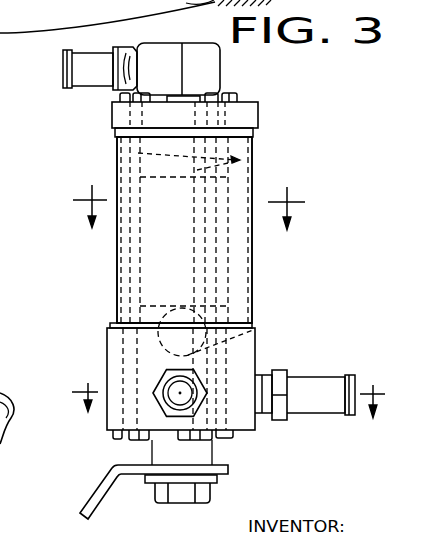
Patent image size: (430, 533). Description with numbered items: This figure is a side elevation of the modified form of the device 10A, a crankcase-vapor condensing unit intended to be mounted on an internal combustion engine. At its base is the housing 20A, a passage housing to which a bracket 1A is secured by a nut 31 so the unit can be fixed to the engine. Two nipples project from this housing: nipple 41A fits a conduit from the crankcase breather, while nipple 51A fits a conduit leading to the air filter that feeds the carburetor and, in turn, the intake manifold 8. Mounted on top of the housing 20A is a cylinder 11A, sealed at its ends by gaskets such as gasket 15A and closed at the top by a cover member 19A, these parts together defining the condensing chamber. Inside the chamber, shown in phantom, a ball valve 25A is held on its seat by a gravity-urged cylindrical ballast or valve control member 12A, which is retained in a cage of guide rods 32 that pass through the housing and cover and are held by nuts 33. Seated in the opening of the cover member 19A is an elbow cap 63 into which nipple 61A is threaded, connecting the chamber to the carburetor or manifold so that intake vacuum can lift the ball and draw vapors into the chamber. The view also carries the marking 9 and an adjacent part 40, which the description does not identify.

The bracket 1A is at (100, 477).
The intake manifold 8 is at (189, 207).
The section line 9- 9 is at (228, 390).
The modified form of the device 10A is at (110, 135).
The cylinder 11A is at (116, 250).
The ballast or valve control member 12A is at (153, 187).
The gasket 15A is at (251, 133).
The cover member 19A is at (251, 115).
The housing 20A is at (122, 343).
The ball valve 25A is at (197, 315).
The nut 31 is at (207, 498).
The guide rods 32 is at (254, 162).
The nuts 33 is at (222, 96).
The hose 40 is at (15, 408).
The nipple 41A is at (280, 375).
The nipple 51A is at (163, 397).
The nipple 61A is at (63, 68).
The elbow cap 63 is at (168, 52).